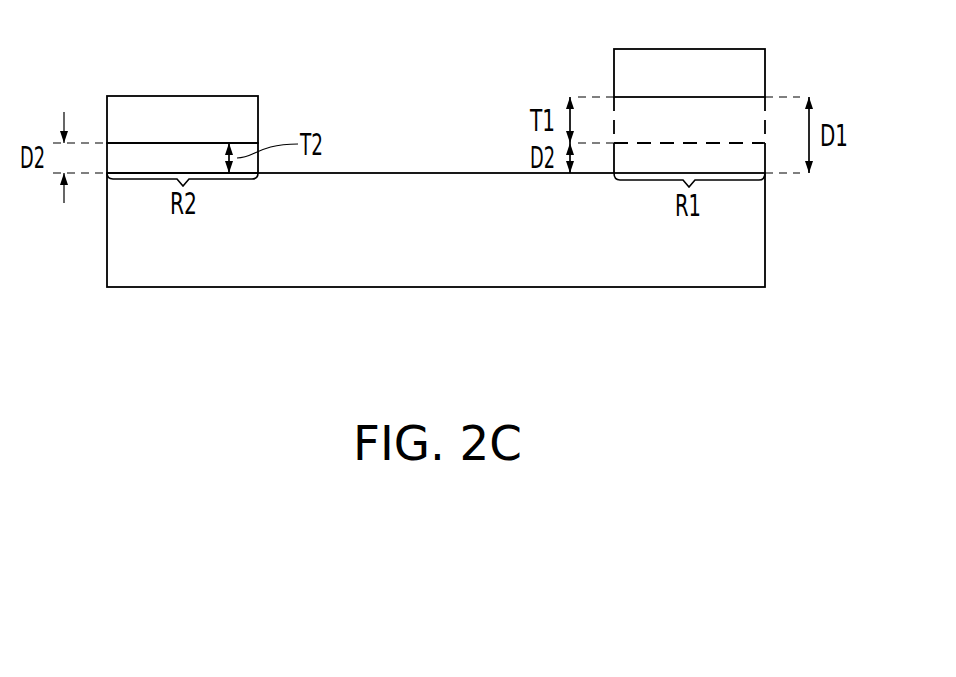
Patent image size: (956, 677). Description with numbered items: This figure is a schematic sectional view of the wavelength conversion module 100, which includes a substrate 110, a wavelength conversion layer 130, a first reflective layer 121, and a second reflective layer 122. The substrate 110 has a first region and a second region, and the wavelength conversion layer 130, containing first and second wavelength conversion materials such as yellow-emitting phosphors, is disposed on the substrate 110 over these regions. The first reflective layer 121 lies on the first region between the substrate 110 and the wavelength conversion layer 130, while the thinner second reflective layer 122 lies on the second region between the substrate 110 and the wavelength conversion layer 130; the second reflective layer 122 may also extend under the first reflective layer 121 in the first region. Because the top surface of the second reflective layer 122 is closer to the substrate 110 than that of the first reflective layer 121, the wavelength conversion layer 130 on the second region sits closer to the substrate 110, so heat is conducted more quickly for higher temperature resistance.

The substrate 110 is at (720, 240).
The first reflective layer 121 is at (717, 119).
The second reflective layer 122 is at (167, 166).
The wavelength conversion layer 130 is at (243, 117).
The wavelength conversion module 100 is at (859, 343).